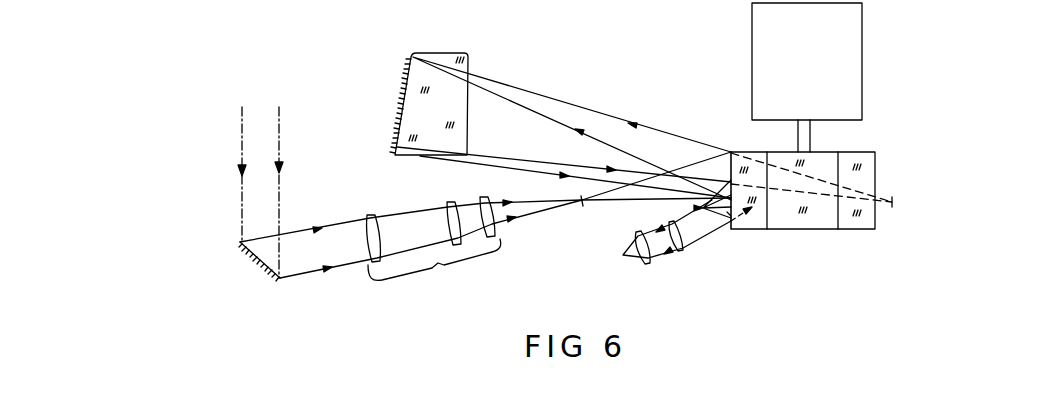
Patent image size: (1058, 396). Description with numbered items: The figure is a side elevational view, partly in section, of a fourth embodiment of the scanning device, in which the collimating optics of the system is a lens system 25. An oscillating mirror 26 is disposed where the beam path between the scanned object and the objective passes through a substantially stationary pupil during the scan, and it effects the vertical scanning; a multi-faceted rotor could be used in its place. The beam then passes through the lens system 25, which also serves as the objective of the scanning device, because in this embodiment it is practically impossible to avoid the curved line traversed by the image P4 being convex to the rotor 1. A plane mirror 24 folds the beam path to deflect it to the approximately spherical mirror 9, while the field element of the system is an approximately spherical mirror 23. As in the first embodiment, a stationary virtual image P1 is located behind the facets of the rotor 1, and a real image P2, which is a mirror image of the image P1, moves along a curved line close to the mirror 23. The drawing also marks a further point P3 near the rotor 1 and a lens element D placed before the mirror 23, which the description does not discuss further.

The rotor 1 is at (823, 230).
The approximately spherical mirror 9 is at (427, 50).
The approximately spherical mirror 23 is at (696, 208).
The plane mirror 24 is at (730, 218).
The lens system 25 is at (434, 251).
The oscillating mirror 26 is at (272, 282).
The detector lens D is at (623, 255).
The stationary virtual image P1 is at (760, 203).
The real image P2 is at (729, 214).
The point P3 is at (892, 204).
The image P4 is at (609, 222).